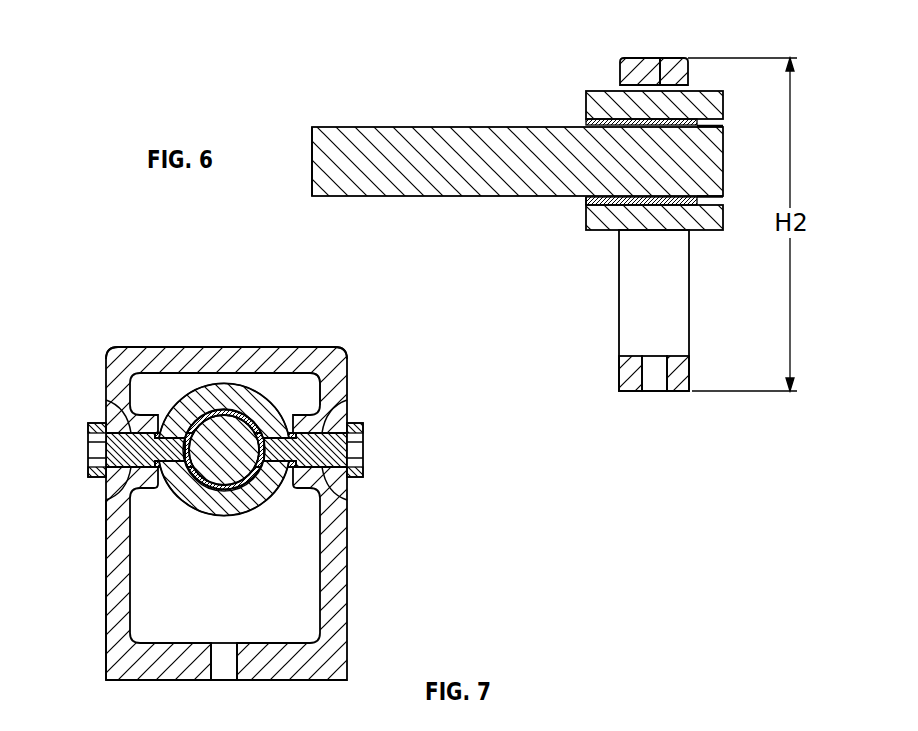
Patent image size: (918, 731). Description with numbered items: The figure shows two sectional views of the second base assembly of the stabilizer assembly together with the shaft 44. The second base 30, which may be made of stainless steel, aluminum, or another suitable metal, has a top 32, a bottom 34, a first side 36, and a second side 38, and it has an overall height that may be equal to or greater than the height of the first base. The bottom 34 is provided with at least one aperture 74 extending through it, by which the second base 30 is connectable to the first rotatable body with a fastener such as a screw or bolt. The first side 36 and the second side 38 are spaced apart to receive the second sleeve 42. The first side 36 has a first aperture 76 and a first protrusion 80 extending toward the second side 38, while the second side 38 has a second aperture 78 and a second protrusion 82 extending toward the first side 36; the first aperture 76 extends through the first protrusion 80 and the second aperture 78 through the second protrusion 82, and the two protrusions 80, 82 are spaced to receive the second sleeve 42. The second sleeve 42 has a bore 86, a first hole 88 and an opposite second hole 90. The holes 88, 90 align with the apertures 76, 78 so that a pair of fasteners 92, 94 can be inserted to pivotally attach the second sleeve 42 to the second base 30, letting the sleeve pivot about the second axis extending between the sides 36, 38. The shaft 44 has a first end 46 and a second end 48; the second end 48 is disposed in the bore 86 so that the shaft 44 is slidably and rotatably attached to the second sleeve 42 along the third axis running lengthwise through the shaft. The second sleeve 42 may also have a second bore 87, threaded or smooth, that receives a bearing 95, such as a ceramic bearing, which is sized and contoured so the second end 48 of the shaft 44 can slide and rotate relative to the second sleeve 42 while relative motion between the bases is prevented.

In FIG. 6, the second base 30 is at (663, 58).
In FIG. 7, the second base 30 is at (165, 347).
In FIG. 6, the top 32 is at (635, 58).
In FIG. 7, the top 32 is at (300, 347).
In FIG. 6, the bottom 34 is at (627, 391).
In FIG. 7, the bottom 34 is at (275, 680).
In FIG. 7, the first side 36 is at (347, 538).
In FIG. 6, the second side 38 is at (619, 305).
In FIG. 7, the second side 38 is at (106, 565).
In FIG. 6, the second sleeve 42 is at (723, 102).
In FIG. 7, the second sleeve 42 is at (203, 508).
In FIG. 6, the shaft 44 is at (443, 127).
In FIG. 7, the shaft 44 is at (233, 489).
In FIG. 6, the first end 46 is at (312, 165).
In FIG. 6, the second end 48 is at (723, 136).
In FIG. 7, the second end 48 is at (225, 435).
In FIG. 6, the aperture 74 is at (655, 391).
In FIG. 7, the aperture 74 is at (225, 643).
In FIG. 7, the first aperture 76 is at (342, 403).
In FIG. 7, the second aperture 78 is at (110, 402).
In FIG. 7, the first protrusion 80 is at (300, 484).
In FIG. 7, the second protrusion 82 is at (152, 484).
In FIG. 6, the bore 86 is at (721, 208).
In FIG. 6, the second bore 87 is at (595, 206).
In FIG. 7, the second bore 87 is at (258, 405).
In FIG. 7, the first hole 88 is at (257, 489).
In FIG. 7, the second hole 90 is at (210, 385).
In FIG. 7, the fastener 92 is at (363, 475).
In FIG. 7, the fastener 94 is at (88, 468).
In FIG. 6, the bearing 95 is at (586, 197).
In FIG. 7, the bearing 95 is at (183, 468).